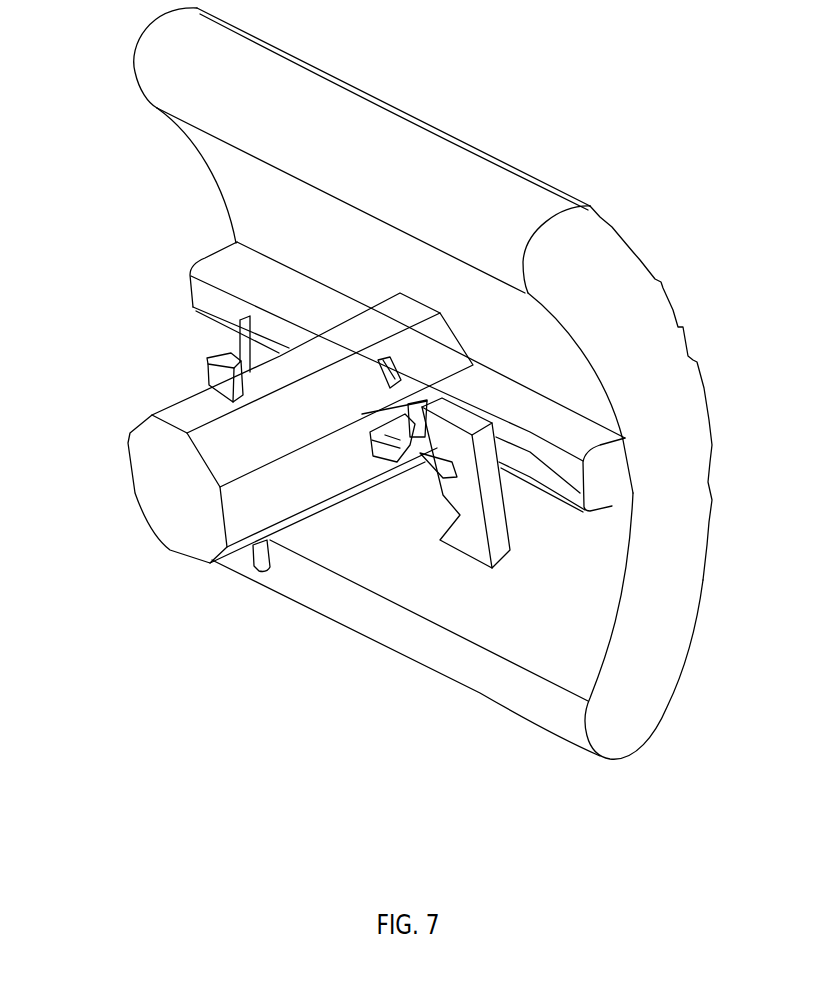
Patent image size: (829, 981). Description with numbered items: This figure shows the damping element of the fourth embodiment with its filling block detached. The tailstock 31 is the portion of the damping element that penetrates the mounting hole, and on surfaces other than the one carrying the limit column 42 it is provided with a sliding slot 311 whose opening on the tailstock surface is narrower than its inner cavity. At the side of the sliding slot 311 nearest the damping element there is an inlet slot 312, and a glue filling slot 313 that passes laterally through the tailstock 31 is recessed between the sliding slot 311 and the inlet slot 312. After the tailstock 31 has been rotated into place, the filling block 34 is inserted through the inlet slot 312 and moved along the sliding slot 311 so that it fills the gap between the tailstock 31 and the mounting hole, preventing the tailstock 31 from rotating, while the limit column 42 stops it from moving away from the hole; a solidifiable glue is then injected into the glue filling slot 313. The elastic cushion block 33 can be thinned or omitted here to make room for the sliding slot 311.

The tailstock 31 is at (162, 460).
The sliding slot 311 is at (388, 455).
The inlet slot 312 is at (425, 455).
The glue filling slot 313 is at (382, 360).
The elastic cushion block 33 is at (600, 472).
The filling block 34 is at (497, 508).
The limit column 42 is at (207, 366).